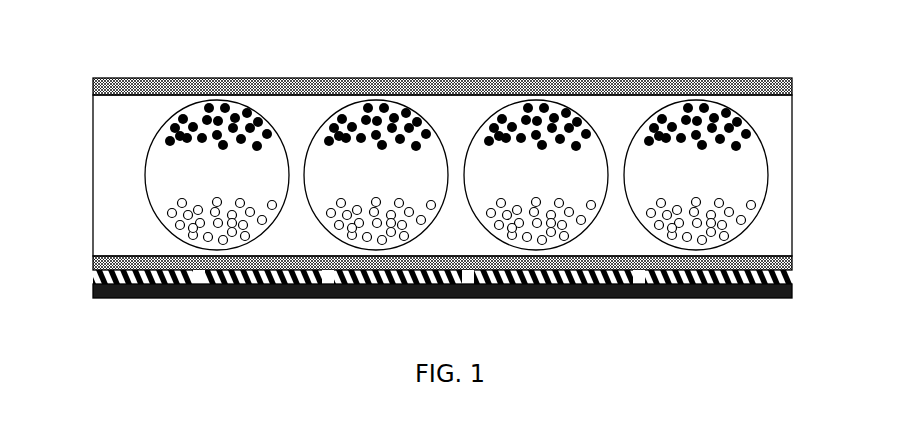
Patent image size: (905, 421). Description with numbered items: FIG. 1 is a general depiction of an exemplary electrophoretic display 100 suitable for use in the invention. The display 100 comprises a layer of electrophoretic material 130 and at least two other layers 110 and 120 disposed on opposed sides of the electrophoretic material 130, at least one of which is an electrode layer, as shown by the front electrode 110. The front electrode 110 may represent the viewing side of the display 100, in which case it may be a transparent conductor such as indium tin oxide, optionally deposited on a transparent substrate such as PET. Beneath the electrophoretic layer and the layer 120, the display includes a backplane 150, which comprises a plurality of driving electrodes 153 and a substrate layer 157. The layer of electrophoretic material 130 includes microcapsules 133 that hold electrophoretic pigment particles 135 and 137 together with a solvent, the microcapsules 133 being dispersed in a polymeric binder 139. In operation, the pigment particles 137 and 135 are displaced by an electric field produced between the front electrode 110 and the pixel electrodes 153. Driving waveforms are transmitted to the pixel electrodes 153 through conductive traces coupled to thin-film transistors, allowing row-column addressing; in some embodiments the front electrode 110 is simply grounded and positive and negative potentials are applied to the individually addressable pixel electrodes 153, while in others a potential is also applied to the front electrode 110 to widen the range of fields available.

The display 100 is at (782, 51).
The front electrode 110 is at (96, 83).
The layer 120 is at (121, 257).
The layer of electrophoretic material 130 is at (107, 193).
The microcapsules 133 is at (379, 189).
The electrophoretic pigment particles 135 is at (336, 228).
The electrophoretic pigment particles 137 is at (332, 124).
The polymeric binder 139 is at (471, 124).
The backplane 150 is at (797, 270).
The driving electrodes 153 is at (100, 277).
The substrate layer 157 is at (96, 289).